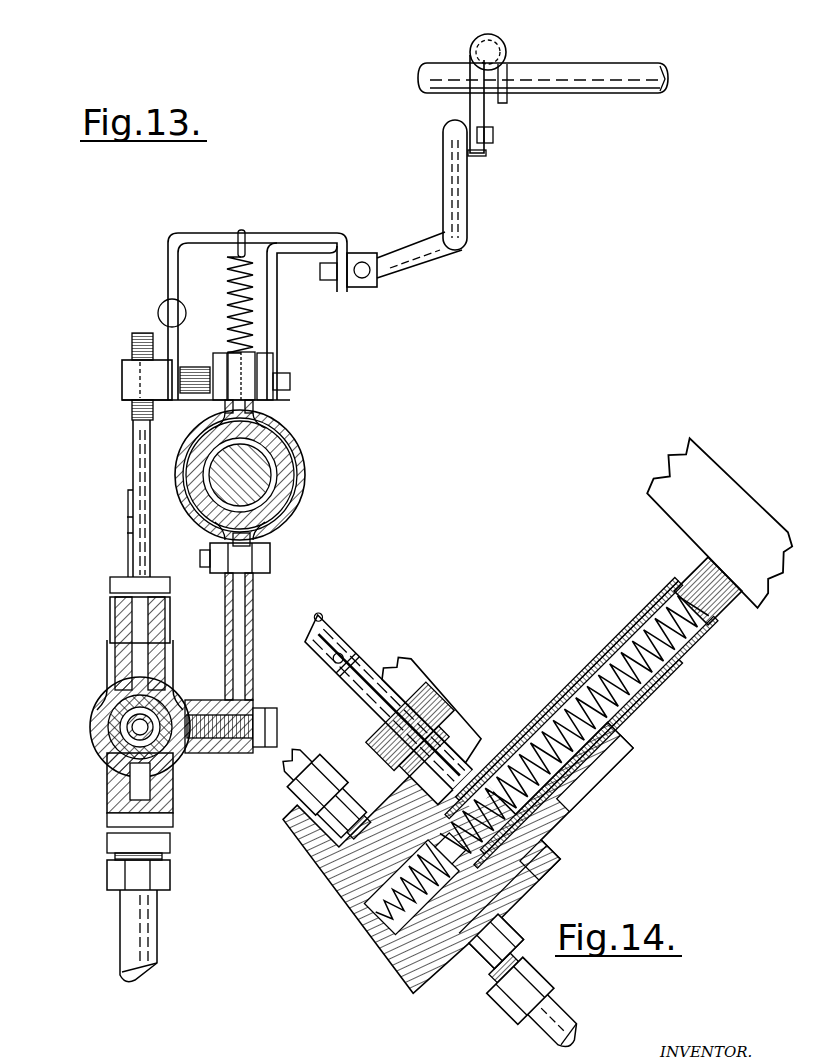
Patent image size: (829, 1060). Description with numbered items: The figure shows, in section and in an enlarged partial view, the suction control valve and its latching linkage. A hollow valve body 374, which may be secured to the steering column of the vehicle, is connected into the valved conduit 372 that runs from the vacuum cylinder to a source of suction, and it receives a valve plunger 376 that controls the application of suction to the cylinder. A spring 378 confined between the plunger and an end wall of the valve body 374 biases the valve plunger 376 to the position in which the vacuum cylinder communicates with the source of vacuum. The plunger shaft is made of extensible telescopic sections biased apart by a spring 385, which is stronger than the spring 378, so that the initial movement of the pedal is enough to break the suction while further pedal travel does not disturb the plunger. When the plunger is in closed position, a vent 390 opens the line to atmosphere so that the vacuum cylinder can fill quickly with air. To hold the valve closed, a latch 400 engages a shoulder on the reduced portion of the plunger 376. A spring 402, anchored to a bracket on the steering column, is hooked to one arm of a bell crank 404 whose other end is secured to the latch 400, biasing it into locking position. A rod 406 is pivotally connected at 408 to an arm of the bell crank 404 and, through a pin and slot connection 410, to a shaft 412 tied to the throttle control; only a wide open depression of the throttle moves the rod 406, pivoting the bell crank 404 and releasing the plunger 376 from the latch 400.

In FIG. 13, the valved conduit 372 is at (133, 933).
In FIG. 14, the valved conduit 372 is at (327, 730).
In FIG. 14, the hollow valve body 374 is at (343, 918).
In FIG. 14, the valve plunger 376 is at (497, 887).
In FIG. 14, the spring 378 is at (367, 940).
In FIG. 13, the spring 385 is at (133, 743).
In FIG. 14, the spring 385 is at (680, 640).
In FIG. 13, the vent 390 is at (97, 723).
In FIG. 13, the latch 400 is at (140, 537).
In FIG. 14, the latch 400 is at (362, 670).
In FIG. 13, the spring 402 is at (253, 323).
In FIG. 13, the bell crank 404 is at (210, 237).
In FIG. 13, the rod 406 is at (462, 207).
In FIG. 14, the rod 406 is at (445, 770).
In FIG. 13, the pivotal connection 408 is at (345, 257).
In FIG. 13, the pin and slot connection 410 is at (483, 138).
In FIG. 13, the shaft 412 is at (645, 78).